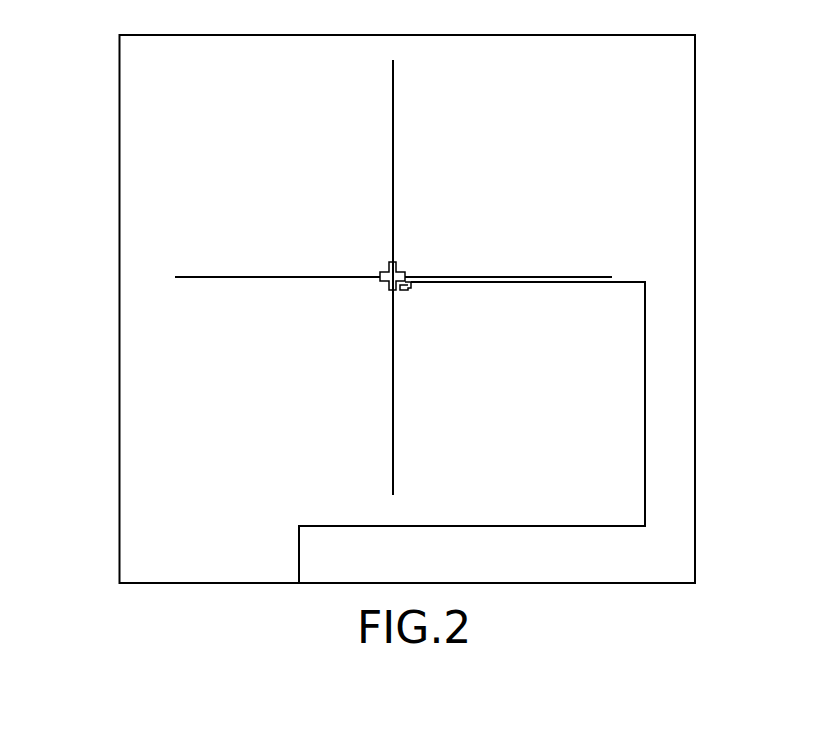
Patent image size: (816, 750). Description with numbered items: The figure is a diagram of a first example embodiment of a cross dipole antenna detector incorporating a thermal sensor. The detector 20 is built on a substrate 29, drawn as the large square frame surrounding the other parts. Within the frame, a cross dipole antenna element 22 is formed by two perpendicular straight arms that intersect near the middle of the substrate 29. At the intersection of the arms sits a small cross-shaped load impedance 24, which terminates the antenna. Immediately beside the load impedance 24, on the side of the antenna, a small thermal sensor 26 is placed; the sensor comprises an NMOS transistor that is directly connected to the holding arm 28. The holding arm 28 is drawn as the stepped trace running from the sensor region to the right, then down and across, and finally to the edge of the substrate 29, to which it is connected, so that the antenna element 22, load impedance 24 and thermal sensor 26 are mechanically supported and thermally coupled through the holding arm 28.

The detector 20 is at (100, 427).
The cross dipole antenna element 22 is at (393, 176).
The load impedance 24 is at (399, 269).
The thermal sensor 26 is at (405, 293).
The holding arm 28 is at (645, 442).
The substrate 29 is at (695, 195).